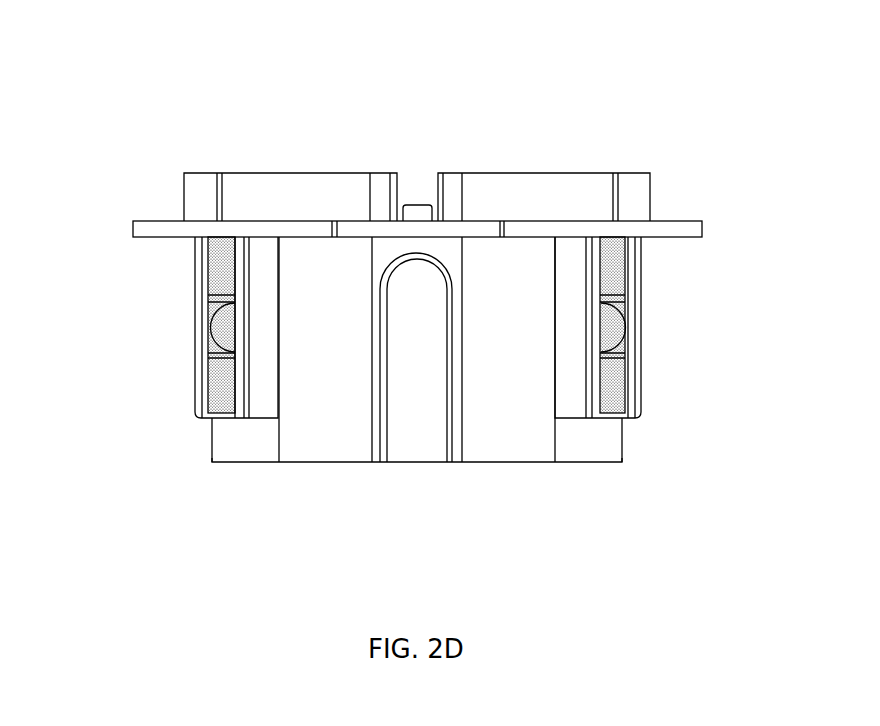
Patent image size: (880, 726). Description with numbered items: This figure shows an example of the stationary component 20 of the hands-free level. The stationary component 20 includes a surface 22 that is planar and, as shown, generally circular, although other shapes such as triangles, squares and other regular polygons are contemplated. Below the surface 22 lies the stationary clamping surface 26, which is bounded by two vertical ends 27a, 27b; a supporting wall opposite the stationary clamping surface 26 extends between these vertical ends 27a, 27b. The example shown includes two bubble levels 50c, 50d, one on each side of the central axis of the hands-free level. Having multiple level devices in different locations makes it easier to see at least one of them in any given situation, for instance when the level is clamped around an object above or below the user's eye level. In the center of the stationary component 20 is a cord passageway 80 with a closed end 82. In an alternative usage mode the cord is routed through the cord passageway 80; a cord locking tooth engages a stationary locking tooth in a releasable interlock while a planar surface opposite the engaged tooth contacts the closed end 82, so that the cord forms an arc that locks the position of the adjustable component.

The stationary component 20 is at (640, 58).
The surface 22 is at (147, 220).
The stationary clamping surface 26 is at (500, 453).
The vertical end 27a is at (212, 462).
The vertical end 27b is at (622, 462).
The bubble level 50c is at (217, 330).
The bubble level 50d is at (613, 323).
The cord passageway 80 is at (407, 438).
The closed end 82 is at (417, 252).